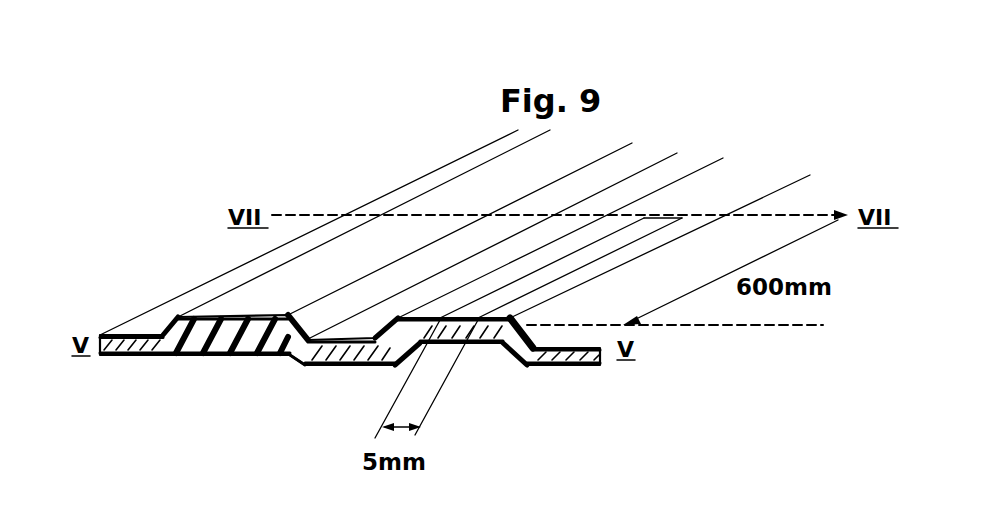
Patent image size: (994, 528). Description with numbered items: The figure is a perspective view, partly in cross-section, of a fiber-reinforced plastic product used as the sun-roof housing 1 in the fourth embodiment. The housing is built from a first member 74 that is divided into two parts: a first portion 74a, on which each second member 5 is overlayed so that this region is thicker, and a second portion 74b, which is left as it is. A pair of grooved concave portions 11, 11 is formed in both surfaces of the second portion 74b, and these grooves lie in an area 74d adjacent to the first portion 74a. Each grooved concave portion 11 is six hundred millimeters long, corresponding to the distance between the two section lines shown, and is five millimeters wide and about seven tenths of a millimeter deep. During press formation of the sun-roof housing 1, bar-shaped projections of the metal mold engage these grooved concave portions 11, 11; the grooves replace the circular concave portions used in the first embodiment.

The sun-roof housing 1 is at (434, 172).
The second member 5 is at (248, 318).
The grooved concave portion 11 is at (462, 320).
The first member 74 is at (548, 358).
The first portion 74a is at (205, 345).
The second portion 74b is at (583, 360).
The area 74d is at (665, 215).